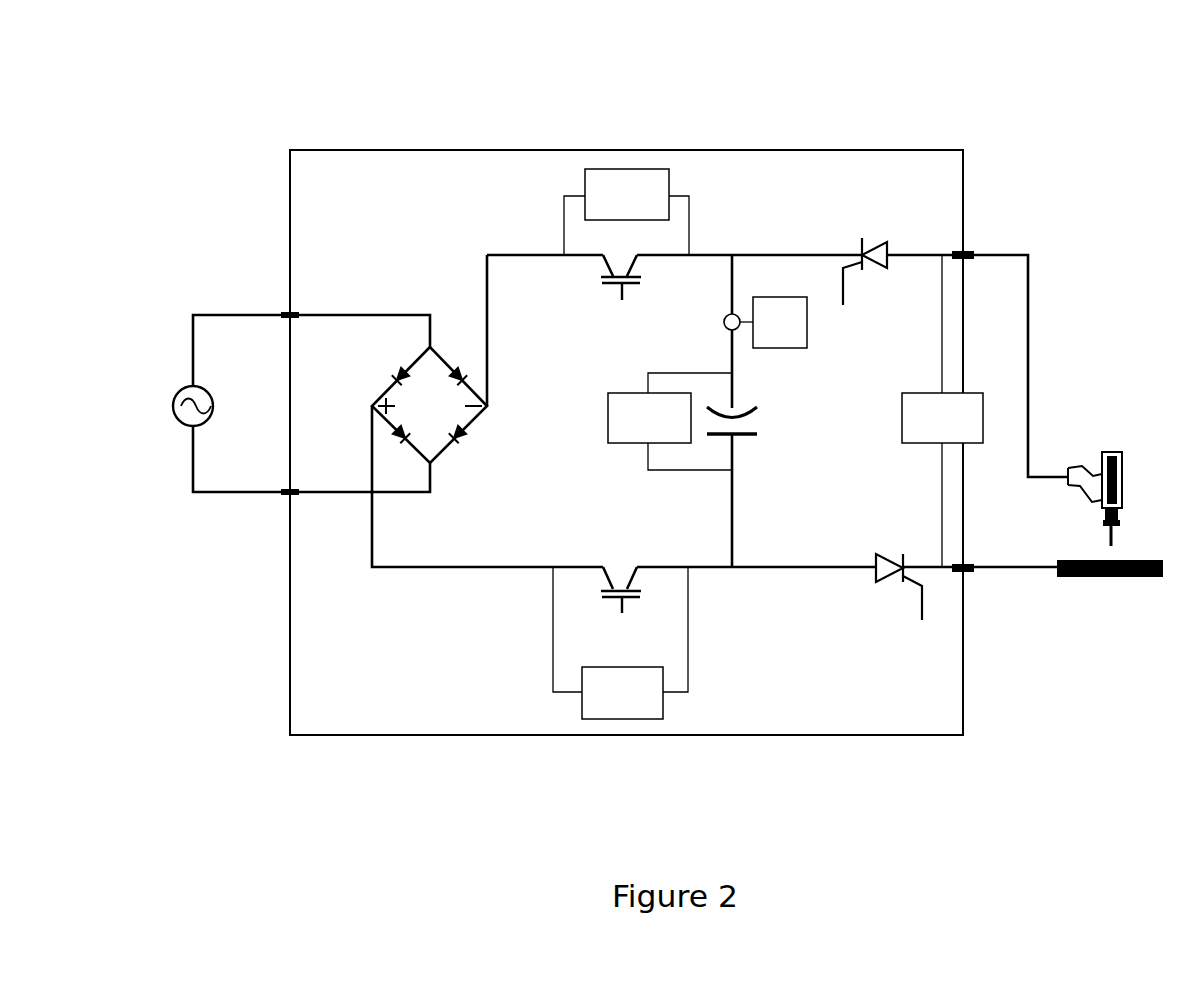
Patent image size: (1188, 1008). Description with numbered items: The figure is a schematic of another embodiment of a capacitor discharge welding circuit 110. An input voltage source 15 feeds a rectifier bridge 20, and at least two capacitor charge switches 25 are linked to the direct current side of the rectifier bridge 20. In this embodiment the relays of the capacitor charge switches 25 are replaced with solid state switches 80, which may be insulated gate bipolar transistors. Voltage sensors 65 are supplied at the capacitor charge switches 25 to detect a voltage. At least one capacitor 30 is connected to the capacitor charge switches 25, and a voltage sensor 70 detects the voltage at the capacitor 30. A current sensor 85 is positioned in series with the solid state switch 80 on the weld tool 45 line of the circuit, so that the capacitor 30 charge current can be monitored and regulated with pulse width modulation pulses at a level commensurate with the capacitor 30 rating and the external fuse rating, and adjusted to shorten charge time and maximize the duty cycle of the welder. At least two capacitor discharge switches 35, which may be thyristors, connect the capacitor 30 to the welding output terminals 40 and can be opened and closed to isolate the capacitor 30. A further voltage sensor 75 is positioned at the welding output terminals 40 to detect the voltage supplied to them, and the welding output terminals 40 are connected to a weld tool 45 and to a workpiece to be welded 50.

The capacitor discharge welding circuit 110 is at (663, 117).
The input voltage source 15 is at (178, 393).
The rectifier bridge 20 is at (470, 424).
The capacitor charge switches 25 is at (630, 303).
The solid state switches 80 is at (603, 280).
The voltage sensors 65 is at (669, 175).
The voltage sensor 70 is at (607, 418).
The capacitor 30 is at (738, 437).
The current sensor 85 is at (807, 322).
The capacitor discharge switches 35 is at (878, 240).
The welding output terminals 40 is at (966, 252).
The voltage sensor 75 is at (902, 418).
The weld tool 45 is at (1124, 463).
The workpiece to be welded 50 is at (1130, 578).